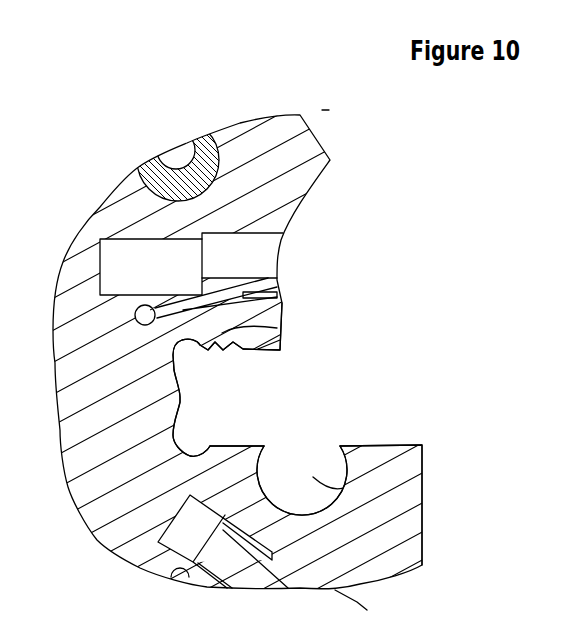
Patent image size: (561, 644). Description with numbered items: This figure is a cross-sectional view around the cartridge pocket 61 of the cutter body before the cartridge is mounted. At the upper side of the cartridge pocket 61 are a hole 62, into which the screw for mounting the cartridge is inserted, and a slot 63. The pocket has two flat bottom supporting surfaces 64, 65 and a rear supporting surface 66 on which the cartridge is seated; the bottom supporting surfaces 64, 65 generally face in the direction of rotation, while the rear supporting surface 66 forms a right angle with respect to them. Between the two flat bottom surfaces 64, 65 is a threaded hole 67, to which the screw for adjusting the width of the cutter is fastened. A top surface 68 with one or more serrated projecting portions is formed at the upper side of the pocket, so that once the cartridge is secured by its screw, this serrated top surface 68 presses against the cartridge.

The cartridge pocket 61 is at (306, 406).
The hole 62 is at (266, 253).
The slot 63 is at (192, 297).
The flat bottom supporting surface 64 is at (379, 445).
The flat bottom supporting surface 65 is at (233, 446).
The rear supporting surface 66 is at (180, 398).
The threaded hole 67 is at (345, 490).
The top surface 68 is at (273, 330).